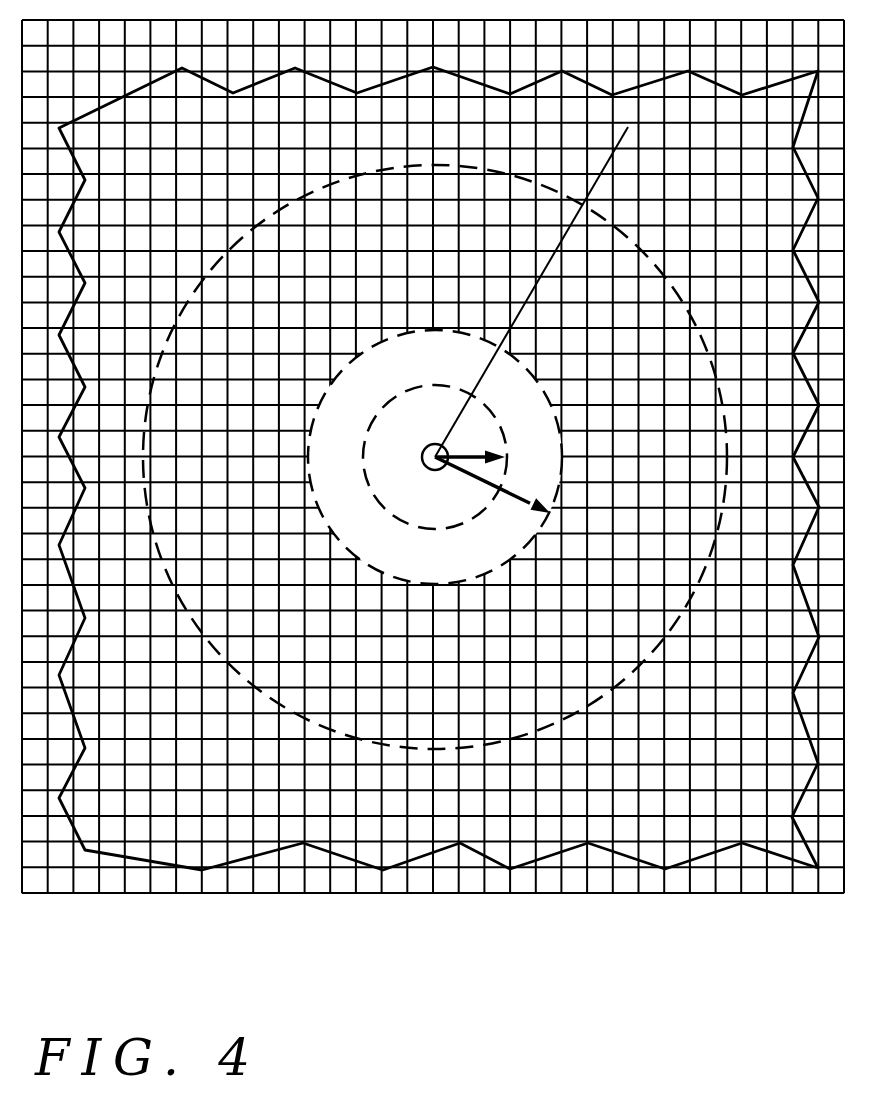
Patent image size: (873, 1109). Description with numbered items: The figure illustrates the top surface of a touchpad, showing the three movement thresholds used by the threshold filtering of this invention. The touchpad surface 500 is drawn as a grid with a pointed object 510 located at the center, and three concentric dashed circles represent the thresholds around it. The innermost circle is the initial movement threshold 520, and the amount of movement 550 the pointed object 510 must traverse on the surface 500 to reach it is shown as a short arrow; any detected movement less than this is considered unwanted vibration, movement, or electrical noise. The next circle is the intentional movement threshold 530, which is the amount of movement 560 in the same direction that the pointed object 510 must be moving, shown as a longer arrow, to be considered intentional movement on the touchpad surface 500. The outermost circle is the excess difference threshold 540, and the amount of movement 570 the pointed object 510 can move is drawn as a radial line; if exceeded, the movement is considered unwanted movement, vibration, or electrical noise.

The touchpad surface 500 is at (422, 855).
The pointed object 510 is at (422, 457).
The initial movement threshold 520 is at (390, 402).
The intentional movement threshold 530 is at (458, 584).
The excess difference threshold 540 is at (293, 193).
The movement necessary to exceed the initial movement threshold 550 is at (472, 450).
The movement in the same direction 560 is at (552, 514).
The movement up to the excess difference threshold 570 is at (612, 159).